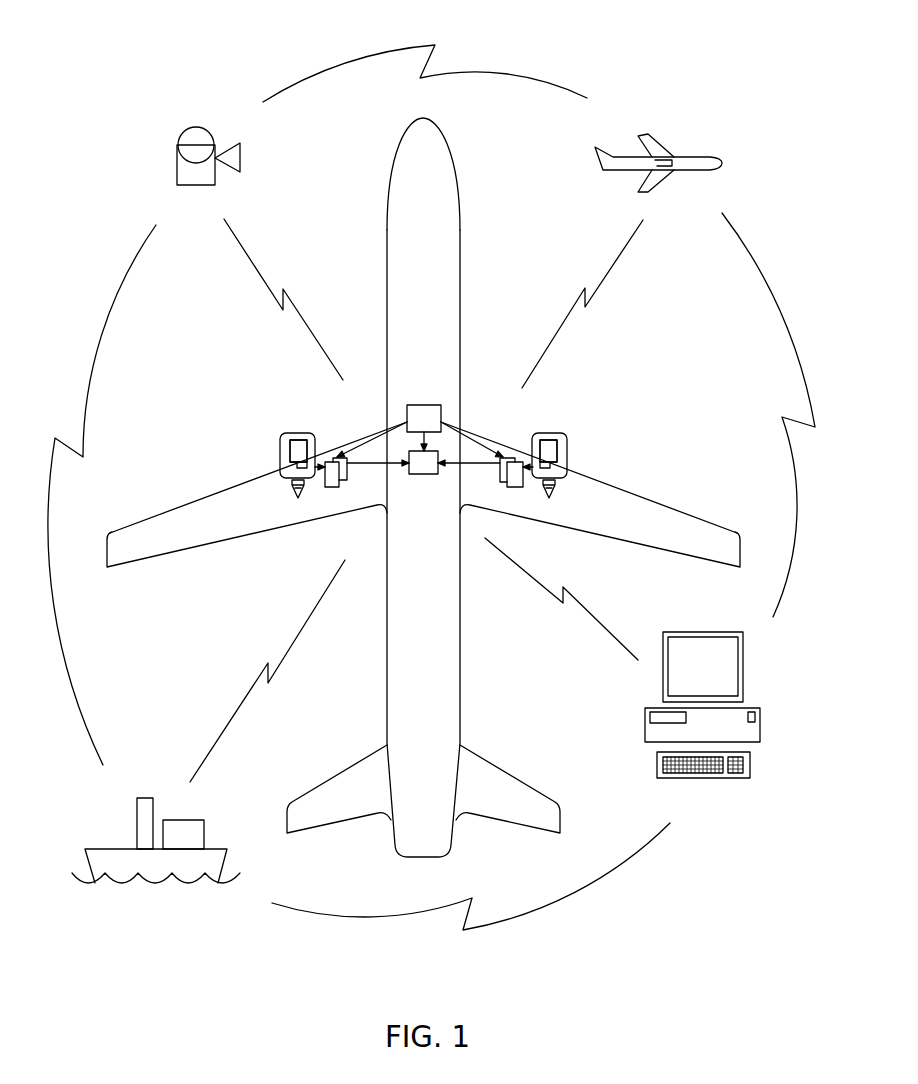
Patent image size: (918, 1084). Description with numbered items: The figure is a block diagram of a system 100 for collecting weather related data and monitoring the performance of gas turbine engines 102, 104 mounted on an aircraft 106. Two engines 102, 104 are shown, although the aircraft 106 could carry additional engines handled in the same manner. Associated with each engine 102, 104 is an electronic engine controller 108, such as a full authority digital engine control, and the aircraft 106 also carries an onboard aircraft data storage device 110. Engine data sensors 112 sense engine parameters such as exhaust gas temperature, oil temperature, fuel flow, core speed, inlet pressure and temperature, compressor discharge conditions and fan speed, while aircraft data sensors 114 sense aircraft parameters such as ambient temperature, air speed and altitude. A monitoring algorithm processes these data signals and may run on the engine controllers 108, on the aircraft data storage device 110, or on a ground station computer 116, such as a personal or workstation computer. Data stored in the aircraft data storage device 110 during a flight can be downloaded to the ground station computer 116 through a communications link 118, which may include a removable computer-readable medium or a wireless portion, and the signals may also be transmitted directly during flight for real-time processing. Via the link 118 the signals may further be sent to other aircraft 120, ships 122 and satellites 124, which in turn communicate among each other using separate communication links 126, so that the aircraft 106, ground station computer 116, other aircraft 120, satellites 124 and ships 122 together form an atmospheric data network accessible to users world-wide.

The system 100 is at (423, 487).
The gas turbine engine 102 is at (297, 433).
The gas turbine engine 104 is at (558, 433).
The aircraft 106 is at (460, 235).
The electronic engine controller 108 is at (337, 457).
The onboard aircraft data storage device 110 is at (427, 475).
The engine data sensors 112 is at (282, 450).
The aircraft data sensors 114 is at (425, 405).
The ground station computer 116 is at (770, 700).
The communications link 118 is at (265, 280).
The other aircraft 120 is at (690, 152).
The ships 122 is at (103, 848).
The satellites 124 is at (195, 127).
The separate communication links 126 is at (472, 72).